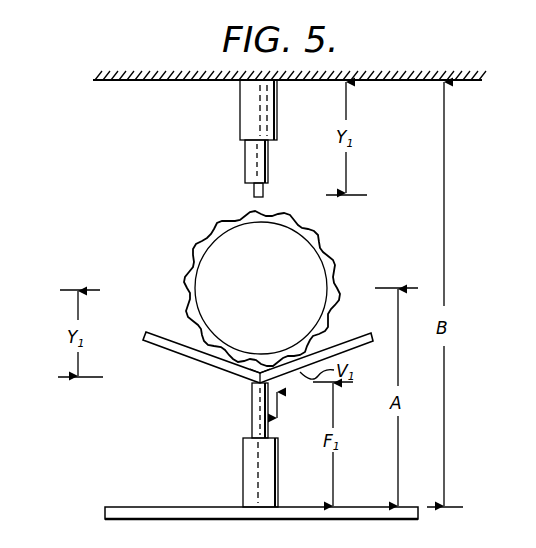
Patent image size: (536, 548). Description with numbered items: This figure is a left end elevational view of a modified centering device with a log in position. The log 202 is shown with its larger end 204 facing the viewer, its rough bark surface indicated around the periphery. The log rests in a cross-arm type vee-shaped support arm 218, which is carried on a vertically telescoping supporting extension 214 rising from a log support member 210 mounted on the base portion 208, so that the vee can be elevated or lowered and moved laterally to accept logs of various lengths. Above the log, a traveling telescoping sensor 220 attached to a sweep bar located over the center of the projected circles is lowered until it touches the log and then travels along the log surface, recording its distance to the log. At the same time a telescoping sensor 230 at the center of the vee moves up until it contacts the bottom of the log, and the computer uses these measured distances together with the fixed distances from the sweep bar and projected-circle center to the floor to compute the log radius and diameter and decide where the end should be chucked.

The log 202 is at (331, 247).
The larger end of the log 204 is at (270, 280).
The base portion 208 is at (120, 516).
The log support member 210 is at (249, 464).
The vertically telescoping supporting extension 214 is at (252, 418).
The vee-shaped support arm 218 is at (175, 352).
The traveling telescoping sensor 220 is at (240, 104).
The telescoping sensor 230 is at (254, 379).